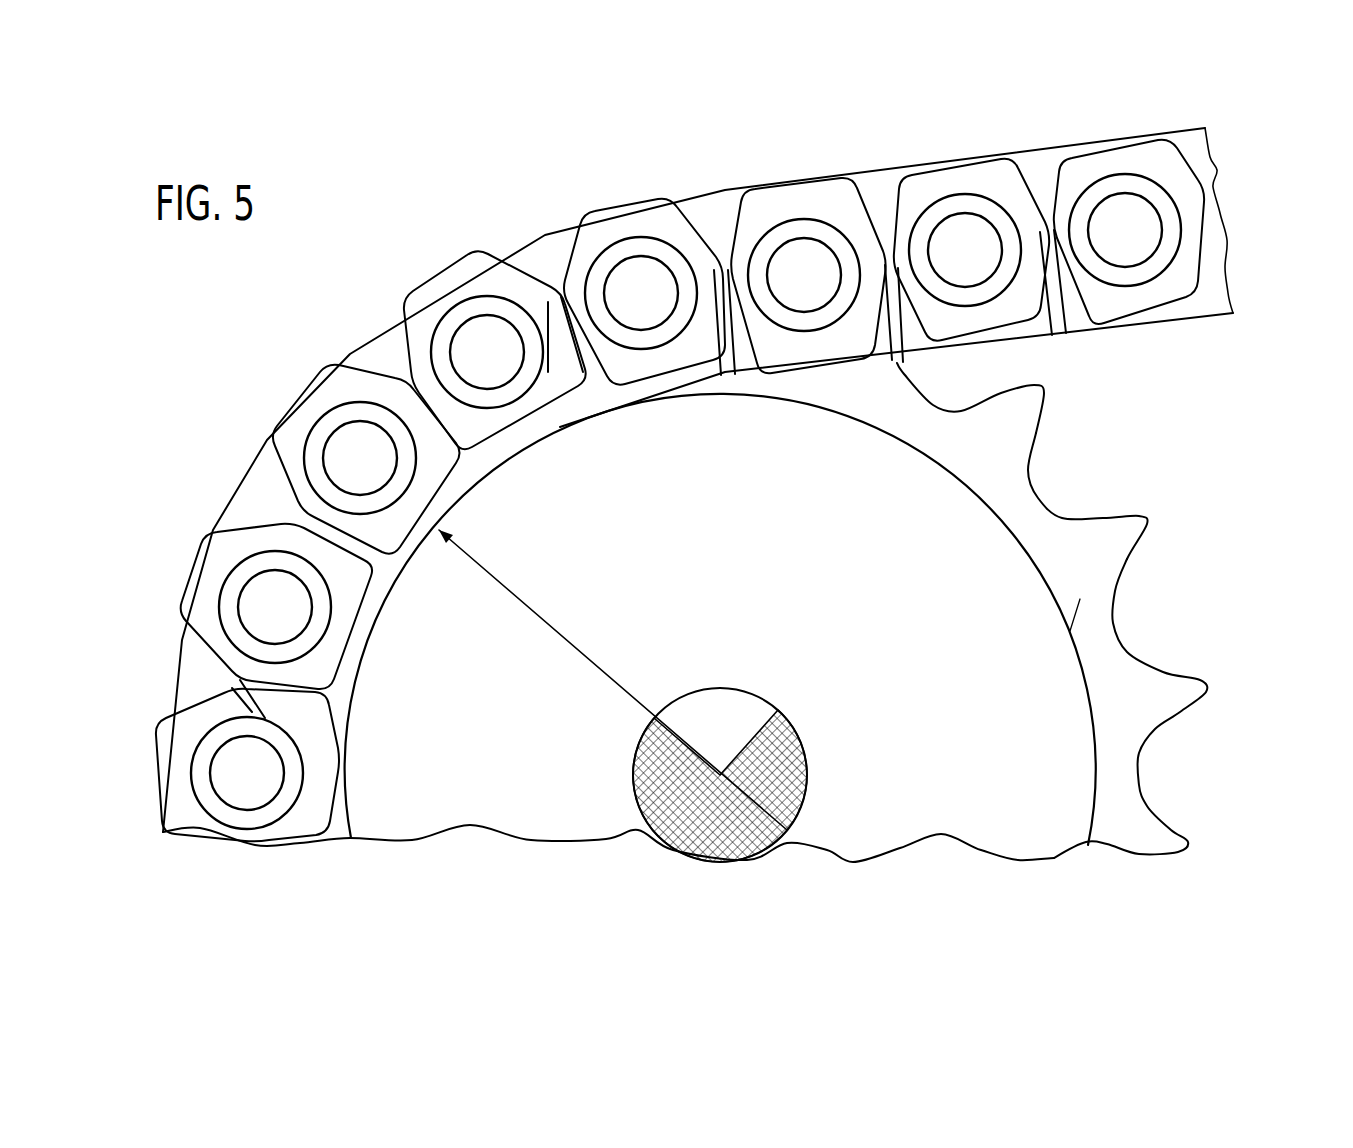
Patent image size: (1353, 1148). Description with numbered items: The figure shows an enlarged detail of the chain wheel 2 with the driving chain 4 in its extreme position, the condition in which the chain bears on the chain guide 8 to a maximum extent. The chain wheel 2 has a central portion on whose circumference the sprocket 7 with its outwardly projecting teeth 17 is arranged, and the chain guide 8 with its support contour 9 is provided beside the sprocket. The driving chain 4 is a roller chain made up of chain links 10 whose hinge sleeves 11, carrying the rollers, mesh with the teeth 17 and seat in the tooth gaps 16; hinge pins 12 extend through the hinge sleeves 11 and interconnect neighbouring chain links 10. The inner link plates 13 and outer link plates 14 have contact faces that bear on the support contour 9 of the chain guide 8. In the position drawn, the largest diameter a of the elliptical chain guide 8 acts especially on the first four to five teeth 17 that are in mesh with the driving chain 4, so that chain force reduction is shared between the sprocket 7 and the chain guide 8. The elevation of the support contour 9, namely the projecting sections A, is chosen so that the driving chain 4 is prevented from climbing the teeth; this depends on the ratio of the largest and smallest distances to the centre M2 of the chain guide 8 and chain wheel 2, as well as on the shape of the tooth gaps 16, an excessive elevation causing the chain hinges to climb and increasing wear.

The chain wheel 2 is at (1220, 781).
The driving chain 4 is at (1250, 249).
The sprocket 7 is at (1062, 433).
The chain guide 8 is at (1052, 758).
The support contour 9 is at (1072, 630).
The chain link 10 is at (538, 229).
The hinge sleeve 11 is at (980, 205).
The hinge pin 12 is at (1130, 208).
The inner link plate 13 is at (723, 195).
The outer link plate 14 is at (838, 190).
The tooth gap 16 is at (1043, 498).
The tooth 17 is at (1147, 537).
The projecting section A is at (303, 511).
The largest diameter a is at (613, 680).
The centre M2 is at (721, 772).